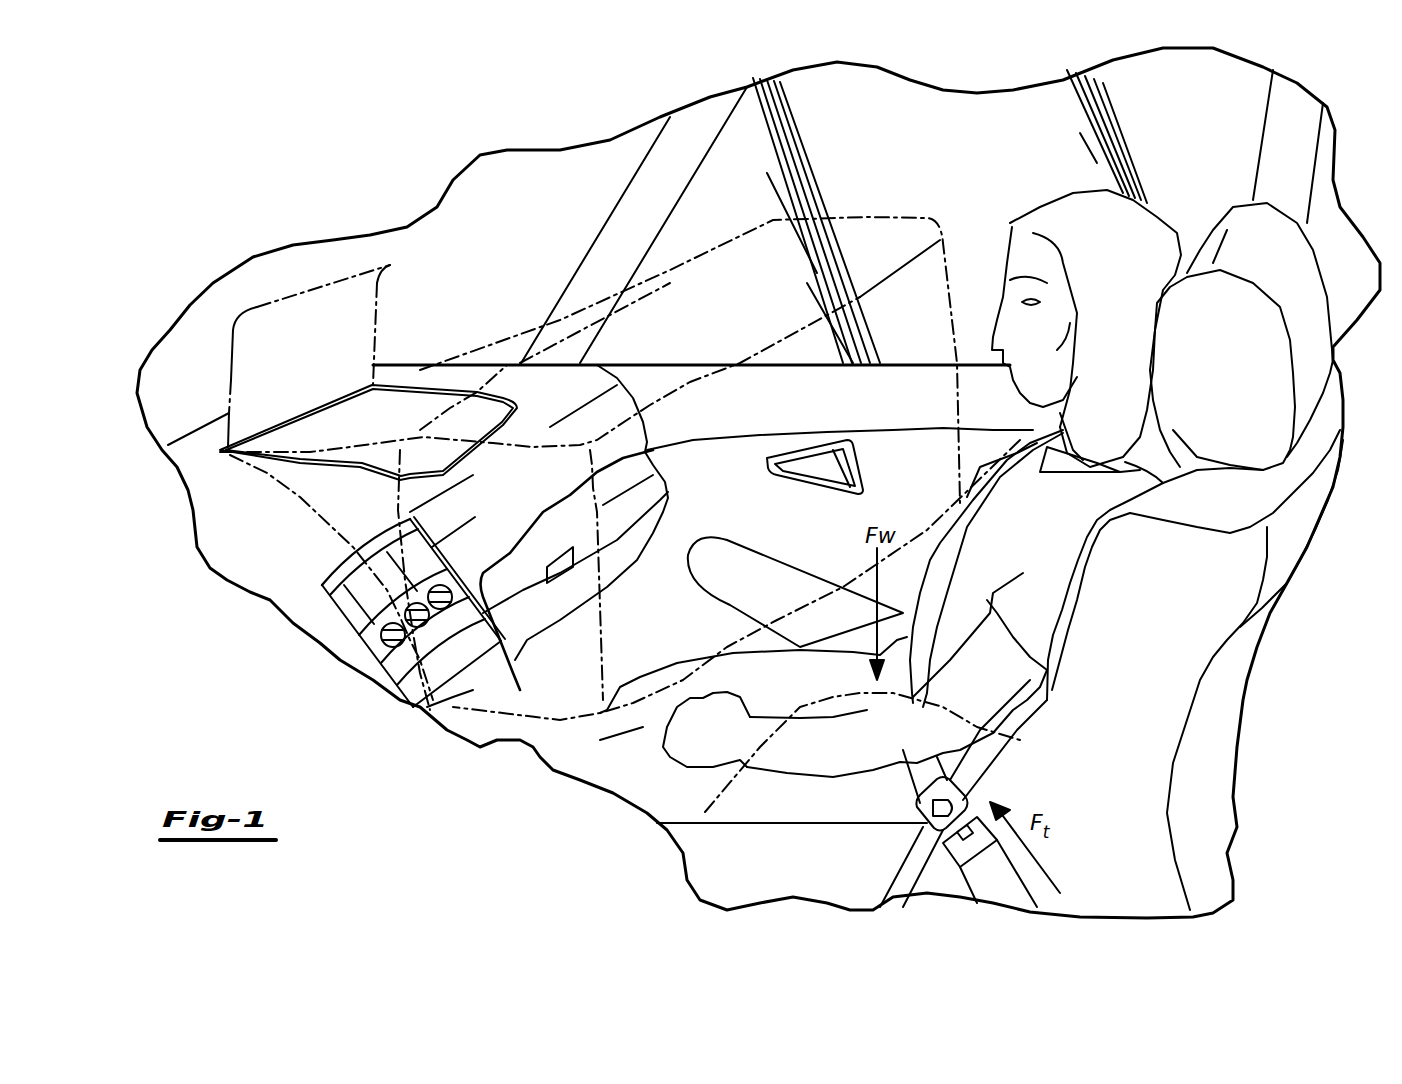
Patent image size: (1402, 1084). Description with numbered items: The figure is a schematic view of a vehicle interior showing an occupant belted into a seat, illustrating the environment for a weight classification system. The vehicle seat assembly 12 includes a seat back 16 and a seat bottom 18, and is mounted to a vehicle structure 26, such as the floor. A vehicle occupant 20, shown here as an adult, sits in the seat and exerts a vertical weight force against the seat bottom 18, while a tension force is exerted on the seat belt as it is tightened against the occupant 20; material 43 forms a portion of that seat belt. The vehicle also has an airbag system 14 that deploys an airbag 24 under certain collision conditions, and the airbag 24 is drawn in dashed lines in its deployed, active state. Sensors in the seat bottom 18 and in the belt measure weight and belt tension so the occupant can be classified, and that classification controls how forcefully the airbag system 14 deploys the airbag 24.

The vehicle seat assembly 12 is at (1021, 555).
The airbag system 14 is at (186, 392).
The seat back 16 is at (1160, 677).
The seat bottom 18 is at (810, 853).
The vehicle occupant 20 is at (1153, 233).
The airbag 24 is at (875, 217).
The vehicle structure 26 is at (497, 727).
The seat belt material 43 is at (963, 517).